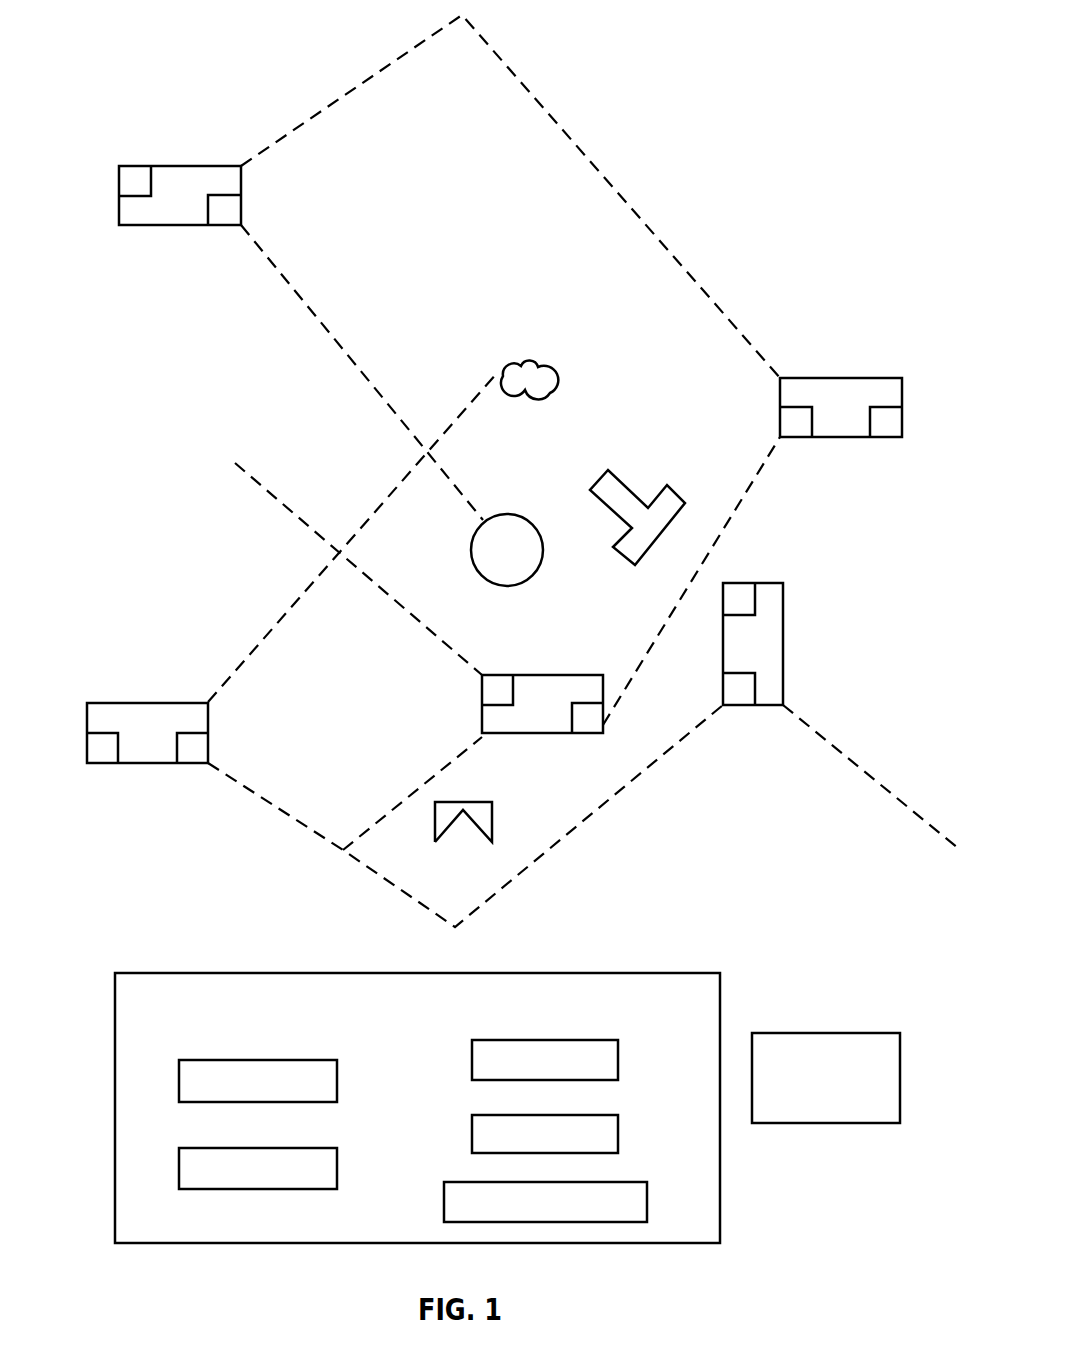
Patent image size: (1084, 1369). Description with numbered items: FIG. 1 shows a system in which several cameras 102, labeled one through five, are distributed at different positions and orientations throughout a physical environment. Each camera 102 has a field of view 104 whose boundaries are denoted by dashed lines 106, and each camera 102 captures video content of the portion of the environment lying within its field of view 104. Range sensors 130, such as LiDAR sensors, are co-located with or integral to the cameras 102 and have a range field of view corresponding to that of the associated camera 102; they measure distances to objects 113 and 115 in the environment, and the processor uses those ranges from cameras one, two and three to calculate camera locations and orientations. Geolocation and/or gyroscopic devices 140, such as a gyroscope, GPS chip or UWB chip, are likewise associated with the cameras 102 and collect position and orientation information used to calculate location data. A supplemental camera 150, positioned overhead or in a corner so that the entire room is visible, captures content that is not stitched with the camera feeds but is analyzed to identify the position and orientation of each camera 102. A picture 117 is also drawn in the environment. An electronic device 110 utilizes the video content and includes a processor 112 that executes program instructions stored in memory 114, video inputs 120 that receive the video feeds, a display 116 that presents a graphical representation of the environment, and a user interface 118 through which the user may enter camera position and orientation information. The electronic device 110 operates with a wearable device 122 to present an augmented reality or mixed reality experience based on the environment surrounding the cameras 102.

The camera 102 is at (205, 165).
The field of view 104 is at (460, 219).
The dashed lines 106 is at (333, 100).
The electronic device 110 is at (547, 1013).
The processor 112 is at (337, 1102).
The object 113 is at (517, 360).
The memory 114 is at (337, 1189).
The object 115 is at (600, 480).
The display 116 is at (598, 1040).
The picture object 117 is at (435, 813).
The user interface 118 is at (598, 1115).
The video inputs 120 is at (625, 1182).
The wearable device 122 is at (826, 1123).
The range sensor 130 is at (223, 218).
The geolocation and/or gyroscopic device 140 is at (130, 175).
The supplemental camera 150 is at (507, 550).